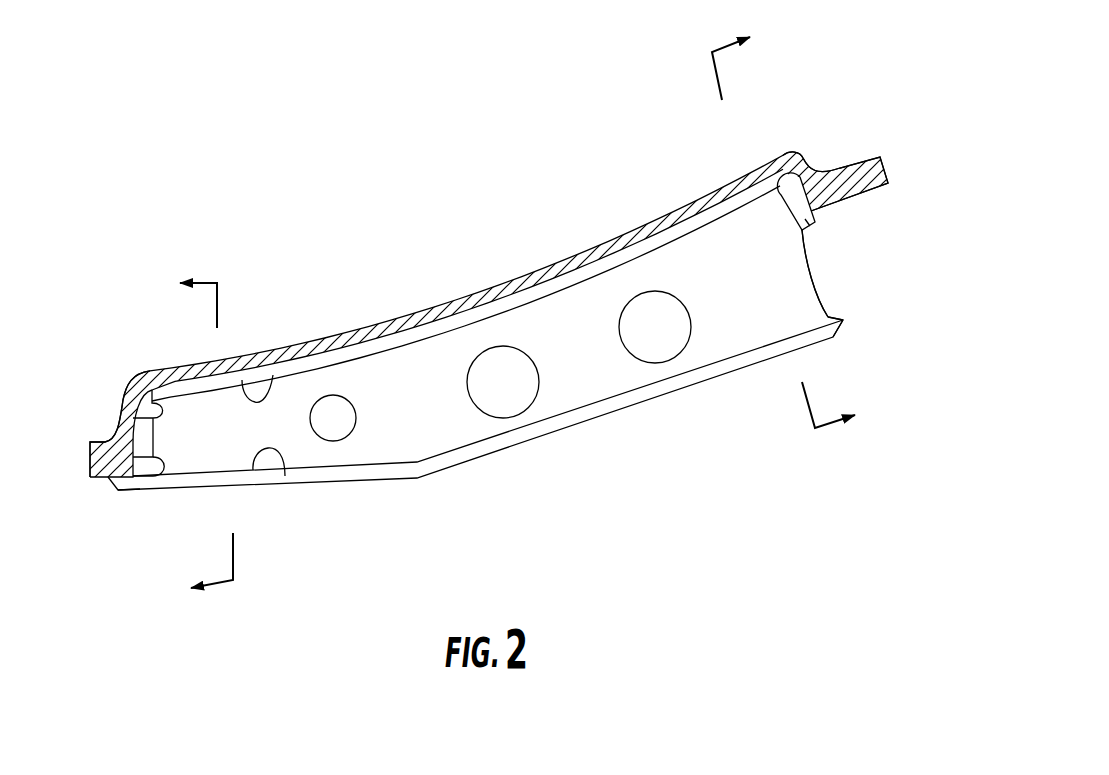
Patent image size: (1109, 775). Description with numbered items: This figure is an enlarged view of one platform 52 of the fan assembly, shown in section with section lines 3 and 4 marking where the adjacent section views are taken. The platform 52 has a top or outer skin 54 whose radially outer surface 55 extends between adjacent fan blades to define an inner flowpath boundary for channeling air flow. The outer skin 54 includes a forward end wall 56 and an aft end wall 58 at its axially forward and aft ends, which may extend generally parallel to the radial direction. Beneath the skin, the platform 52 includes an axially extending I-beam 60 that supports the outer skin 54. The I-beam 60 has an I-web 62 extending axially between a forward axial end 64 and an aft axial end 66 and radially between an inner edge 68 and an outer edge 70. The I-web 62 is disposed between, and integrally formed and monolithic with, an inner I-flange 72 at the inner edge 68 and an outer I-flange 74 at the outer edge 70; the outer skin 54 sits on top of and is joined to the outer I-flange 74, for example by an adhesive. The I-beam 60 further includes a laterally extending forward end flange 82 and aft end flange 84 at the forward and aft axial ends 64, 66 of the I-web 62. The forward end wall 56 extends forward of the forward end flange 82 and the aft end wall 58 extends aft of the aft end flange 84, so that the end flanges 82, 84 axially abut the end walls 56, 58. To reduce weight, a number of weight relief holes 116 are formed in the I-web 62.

The section line 3- 3 is at (188, 443).
The section line 4- 4 is at (801, 218).
The platform 52 is at (200, 534).
The outer skin 54 is at (700, 202).
The radially outer surface 55 is at (588, 250).
The forward end wall 56 is at (121, 403).
The aft end wall 58 is at (806, 157).
The I-beam 60 is at (835, 270).
The I-web 62 is at (756, 298).
The forward axial end 64 is at (177, 437).
The aft axial end 66 is at (803, 277).
The inner edge 68 is at (285, 476).
The outer edge 70 is at (273, 375).
The inner I-flange 72 is at (345, 472).
The outer I-flange 74 is at (353, 337).
The forward end flange 82 is at (142, 465).
The aft end flange 84 is at (815, 236).
The weight relief holes 116 is at (349, 397).